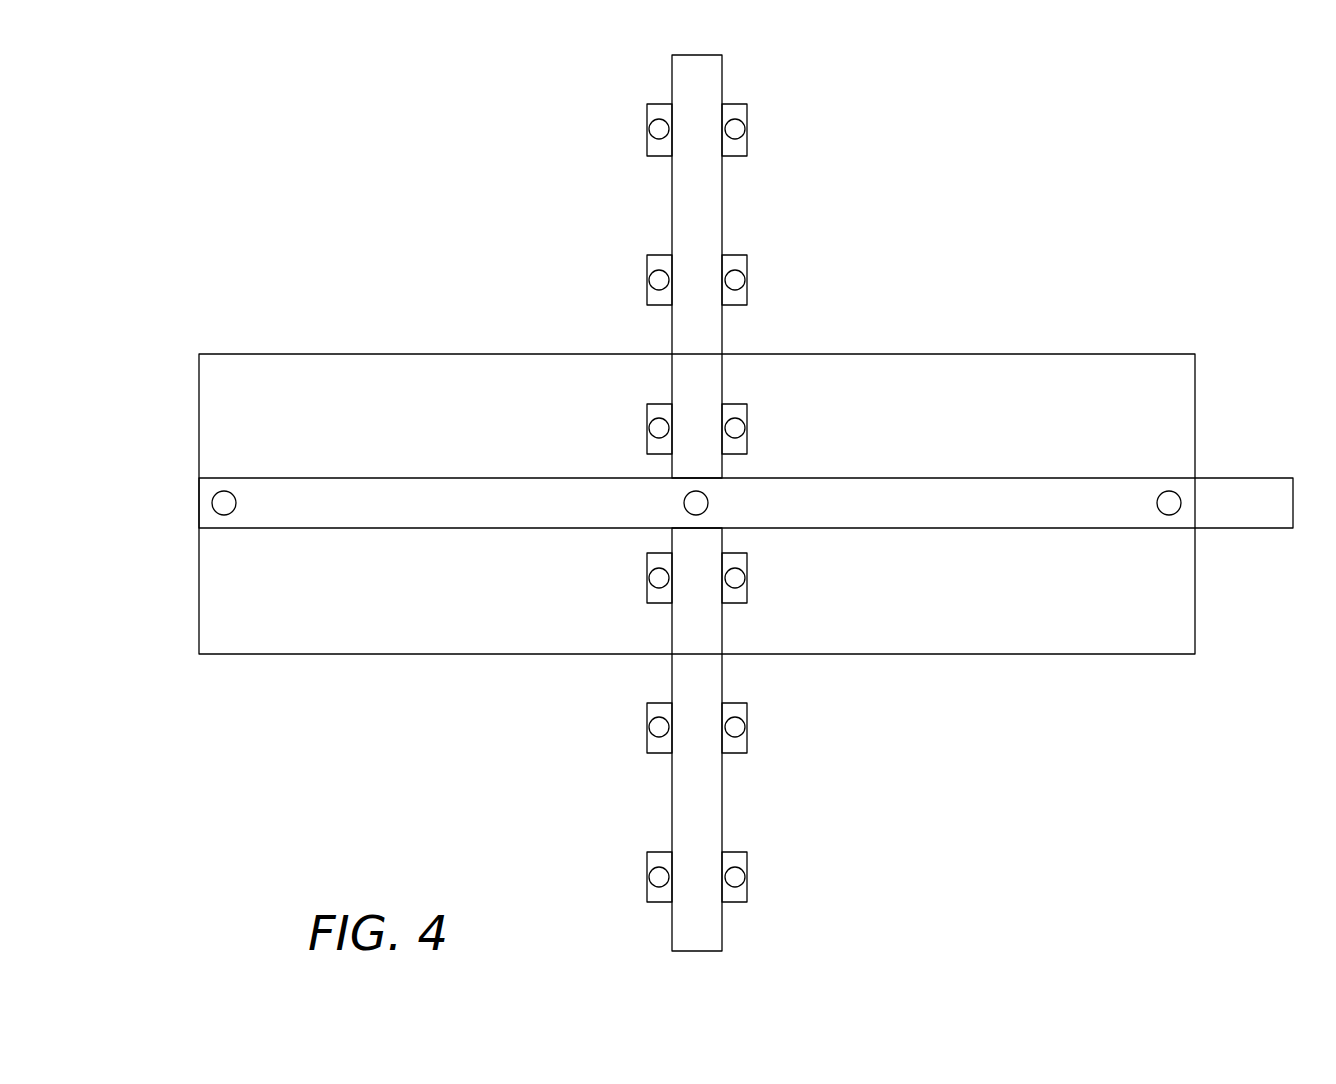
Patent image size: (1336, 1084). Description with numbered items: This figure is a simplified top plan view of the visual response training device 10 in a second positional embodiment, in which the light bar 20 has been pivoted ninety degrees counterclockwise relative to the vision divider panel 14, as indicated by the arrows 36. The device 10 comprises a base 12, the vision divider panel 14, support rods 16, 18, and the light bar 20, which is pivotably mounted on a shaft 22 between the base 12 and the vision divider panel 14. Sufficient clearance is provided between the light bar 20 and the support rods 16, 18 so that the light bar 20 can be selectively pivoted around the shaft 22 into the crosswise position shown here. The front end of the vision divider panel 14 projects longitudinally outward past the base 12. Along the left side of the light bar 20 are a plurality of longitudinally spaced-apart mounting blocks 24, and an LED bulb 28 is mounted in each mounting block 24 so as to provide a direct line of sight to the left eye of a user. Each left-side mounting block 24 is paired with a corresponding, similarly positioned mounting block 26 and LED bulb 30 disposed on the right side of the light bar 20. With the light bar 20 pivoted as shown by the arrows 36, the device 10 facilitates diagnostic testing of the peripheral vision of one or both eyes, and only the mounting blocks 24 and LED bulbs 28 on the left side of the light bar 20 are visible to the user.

The visual response training device 10 is at (253, 183).
The base 12 is at (1175, 640).
The vision divider panel 14 is at (258, 492).
The support rod 16 is at (222, 503).
The support rod 18 is at (1178, 503).
The light bar 20 is at (680, 82).
The shaft 22 is at (705, 503).
The mounting block 24 is at (743, 112).
The mounting block 26 is at (653, 110).
The LED bulb 28 is at (735, 272).
The LED bulb 30 is at (649, 129).
The arrows 36 is at (778, 223).